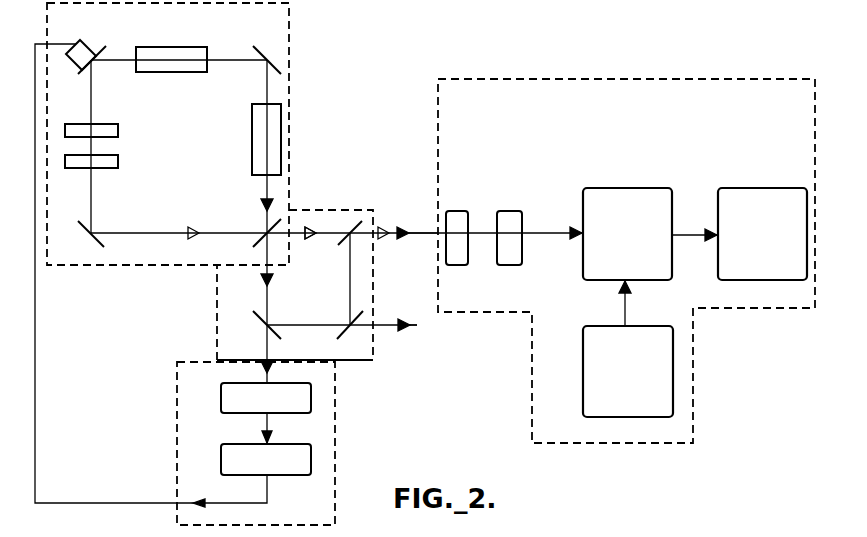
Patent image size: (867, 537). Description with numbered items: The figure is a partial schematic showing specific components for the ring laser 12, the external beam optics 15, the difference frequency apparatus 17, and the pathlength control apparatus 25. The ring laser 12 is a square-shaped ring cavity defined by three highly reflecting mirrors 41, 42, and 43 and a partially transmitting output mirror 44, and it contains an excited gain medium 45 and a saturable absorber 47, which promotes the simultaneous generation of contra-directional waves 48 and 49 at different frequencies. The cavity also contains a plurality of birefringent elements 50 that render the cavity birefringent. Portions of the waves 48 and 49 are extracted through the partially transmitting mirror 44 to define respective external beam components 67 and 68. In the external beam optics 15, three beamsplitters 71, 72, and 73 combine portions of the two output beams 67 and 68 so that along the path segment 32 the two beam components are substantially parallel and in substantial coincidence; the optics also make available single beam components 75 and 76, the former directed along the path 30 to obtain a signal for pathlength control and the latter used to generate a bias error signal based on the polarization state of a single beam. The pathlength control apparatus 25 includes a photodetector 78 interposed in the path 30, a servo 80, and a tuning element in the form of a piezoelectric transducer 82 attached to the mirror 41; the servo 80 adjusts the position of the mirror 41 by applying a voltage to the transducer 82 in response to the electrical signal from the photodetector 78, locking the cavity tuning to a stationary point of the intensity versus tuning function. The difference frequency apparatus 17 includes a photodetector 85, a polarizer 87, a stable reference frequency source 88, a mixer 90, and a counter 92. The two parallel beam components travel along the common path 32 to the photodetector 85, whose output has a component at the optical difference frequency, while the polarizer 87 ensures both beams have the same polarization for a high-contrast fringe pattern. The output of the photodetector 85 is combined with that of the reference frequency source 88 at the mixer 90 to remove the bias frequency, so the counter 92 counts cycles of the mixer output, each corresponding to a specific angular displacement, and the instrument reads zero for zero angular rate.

The ring laser 12 is at (290, 44).
The piezoelectric transducer 82 is at (91, 47).
The mirror 41 is at (98, 52).
The gain medium 45 is at (187, 47).
The mirror 42 is at (258, 46).
The saturable absorber 47 is at (252, 138).
The birefringent elements 50 is at (120, 128).
The mirror 43 is at (98, 245).
The contra-directional wave 49 is at (201, 227).
The contra-directional wave 48 is at (261, 205).
The partially transmitting output mirror 44 is at (259, 245).
The external beam optics 15 is at (352, 210).
The path 30 is at (282, 345).
The external beam component 68 is at (311, 240).
The external beam component 67 is at (275, 282).
The beamsplitter 73 is at (341, 244).
The path segment 32 is at (428, 238).
The single beam component 76 is at (397, 316).
The beamsplitter 71 is at (257, 313).
The beamsplitter 72 is at (343, 338).
The pathlength control apparatus 25 is at (335, 441).
The single beam component 75 is at (262, 367).
The photodetector 78 is at (221, 398).
The servo 80 is at (221, 458).
The difference frequency apparatus 17 is at (755, 79).
The polarizer 87 is at (457, 265).
The photodetector 85 is at (508, 265).
The mixer 90 is at (638, 188).
The counter 92 is at (770, 188).
The reference frequency source 88 is at (647, 325).